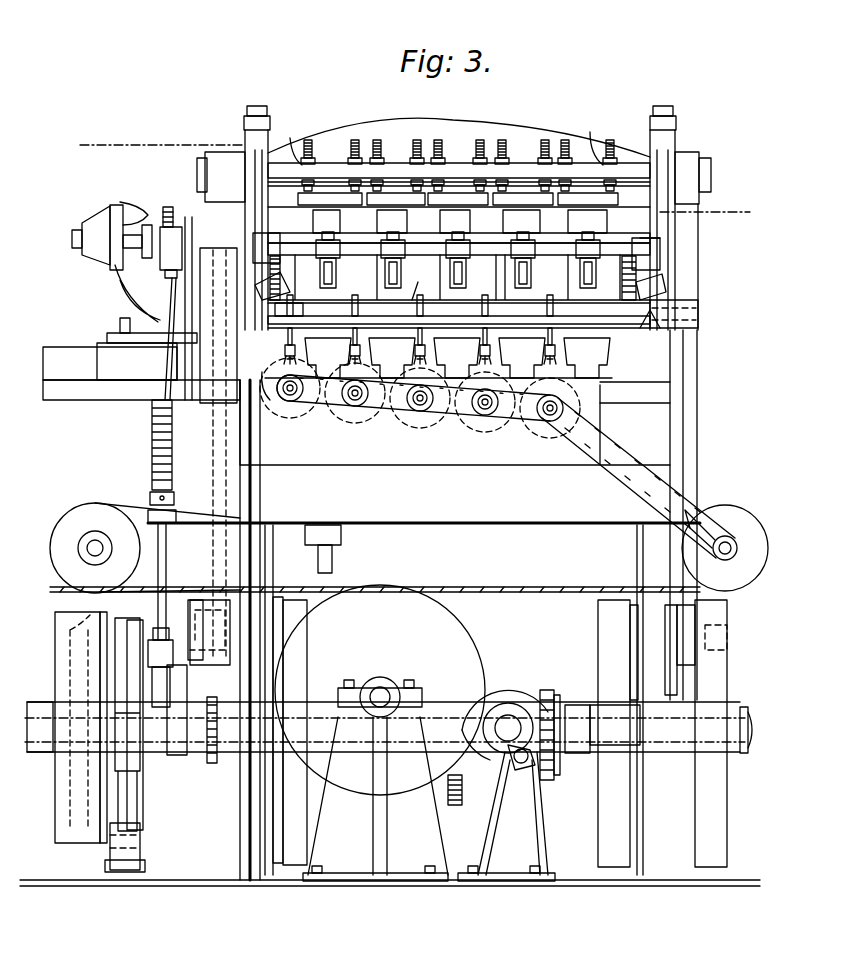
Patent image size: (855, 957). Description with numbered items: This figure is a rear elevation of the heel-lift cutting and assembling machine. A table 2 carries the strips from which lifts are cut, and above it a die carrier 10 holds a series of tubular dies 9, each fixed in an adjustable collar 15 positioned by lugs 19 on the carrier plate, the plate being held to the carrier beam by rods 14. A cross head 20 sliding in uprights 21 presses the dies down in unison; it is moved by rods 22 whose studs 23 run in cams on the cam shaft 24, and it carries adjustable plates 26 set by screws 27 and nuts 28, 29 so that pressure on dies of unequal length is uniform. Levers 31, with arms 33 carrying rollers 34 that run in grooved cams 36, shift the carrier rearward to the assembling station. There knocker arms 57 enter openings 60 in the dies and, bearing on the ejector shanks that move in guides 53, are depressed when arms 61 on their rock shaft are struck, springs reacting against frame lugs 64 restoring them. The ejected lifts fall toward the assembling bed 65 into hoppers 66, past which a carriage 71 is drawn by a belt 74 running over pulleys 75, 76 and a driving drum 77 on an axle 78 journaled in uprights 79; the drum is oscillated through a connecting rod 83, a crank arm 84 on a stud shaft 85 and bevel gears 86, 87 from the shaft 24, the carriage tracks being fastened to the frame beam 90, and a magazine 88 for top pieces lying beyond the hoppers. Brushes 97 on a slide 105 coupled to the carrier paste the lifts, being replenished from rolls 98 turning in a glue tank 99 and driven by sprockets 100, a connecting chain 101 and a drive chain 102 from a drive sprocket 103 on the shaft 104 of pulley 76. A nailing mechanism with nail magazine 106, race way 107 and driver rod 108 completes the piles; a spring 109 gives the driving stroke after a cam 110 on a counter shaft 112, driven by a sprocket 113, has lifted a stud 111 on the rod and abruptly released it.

The table 2 is at (412, 180).
The tubular die members 9 is at (460, 221).
The cutter holder or carrier 10 is at (418, 280).
The bolts or rods 14 is at (670, 318).
The collar 15 is at (412, 240).
The lugs 19 is at (483, 242).
The cross head 20 is at (627, 170).
The uprights 21 is at (668, 165).
The rods 22 is at (697, 455).
The studs 23 is at (740, 615).
The cam shaft 24 is at (745, 722).
The adjustable plates 26 is at (324, 193).
The screws 27 is at (310, 140).
The nut 28 is at (439, 137).
The nut 29 is at (459, 190).
The levers 31 is at (276, 555).
The arms 33 is at (275, 660).
The rollers 34 is at (300, 627).
The cams 36 is at (300, 827).
The guide 53 is at (498, 262).
The knocker arms 57 is at (370, 272).
The opening 60 is at (330, 298).
The arms 61 is at (640, 272).
The lugs 64 is at (665, 290).
The assembling bed 65 is at (62, 400).
The guides 66 is at (438, 358).
The carriage 71 is at (343, 535).
The belt or cable 74 is at (530, 583).
The pulley 75 is at (95, 503).
The guide pulley 76 is at (716, 508).
The driving drum 77 is at (470, 635).
The axle 78 is at (381, 688).
The uprights 79 is at (358, 880).
The connecting rod 83 is at (480, 770).
The crank arm 84 is at (522, 768).
The stud shaft 85 is at (508, 715).
The bevel gear 86 is at (527, 683).
The bevel gear 87 is at (558, 713).
The magazine 88 is at (218, 325).
The rib or beam 90 is at (490, 523).
The brushes 97 is at (365, 313).
The supply rolls 98 is at (257, 398).
The glue tank 99 is at (482, 463).
The sprockets 100 is at (302, 402).
The connecting chain 101 is at (450, 412).
The drive chain 102 is at (612, 478).
The drive sprocket 103 is at (735, 512).
The shaft 104 is at (725, 556).
The frame or slide 105 is at (440, 325).
The nail magazine 106 is at (100, 195).
The race way 107 is at (135, 300).
The rod 108 is at (140, 318).
The spring 109 is at (150, 414).
The cam 110 is at (262, 672).
The stud 111 is at (170, 740).
The counter shaft 112 is at (208, 763).
The sprocket 113 is at (268, 698).